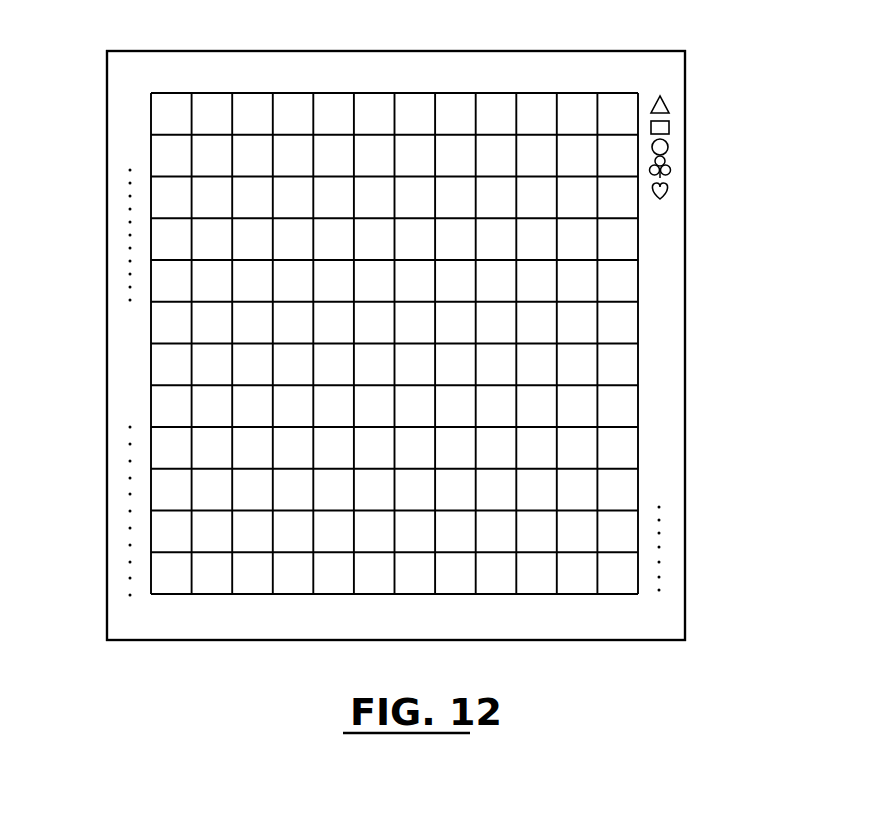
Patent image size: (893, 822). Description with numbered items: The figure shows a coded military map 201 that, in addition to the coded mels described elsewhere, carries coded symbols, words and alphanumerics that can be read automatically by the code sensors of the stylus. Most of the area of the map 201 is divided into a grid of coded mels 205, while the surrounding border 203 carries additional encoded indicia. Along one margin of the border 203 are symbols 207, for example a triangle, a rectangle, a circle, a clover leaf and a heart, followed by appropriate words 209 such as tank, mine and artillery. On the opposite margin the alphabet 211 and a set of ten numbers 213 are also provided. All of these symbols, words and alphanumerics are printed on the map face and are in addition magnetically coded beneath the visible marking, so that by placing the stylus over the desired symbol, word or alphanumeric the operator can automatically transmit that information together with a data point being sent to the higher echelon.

The map 201 is at (687, 515).
The border 203 is at (245, 58).
The coded mels 205 is at (533, 578).
The symbols 207 is at (667, 190).
The words 209 is at (665, 364).
The alphabet 211 is at (128, 134).
The set of ten numbers 213 is at (127, 341).